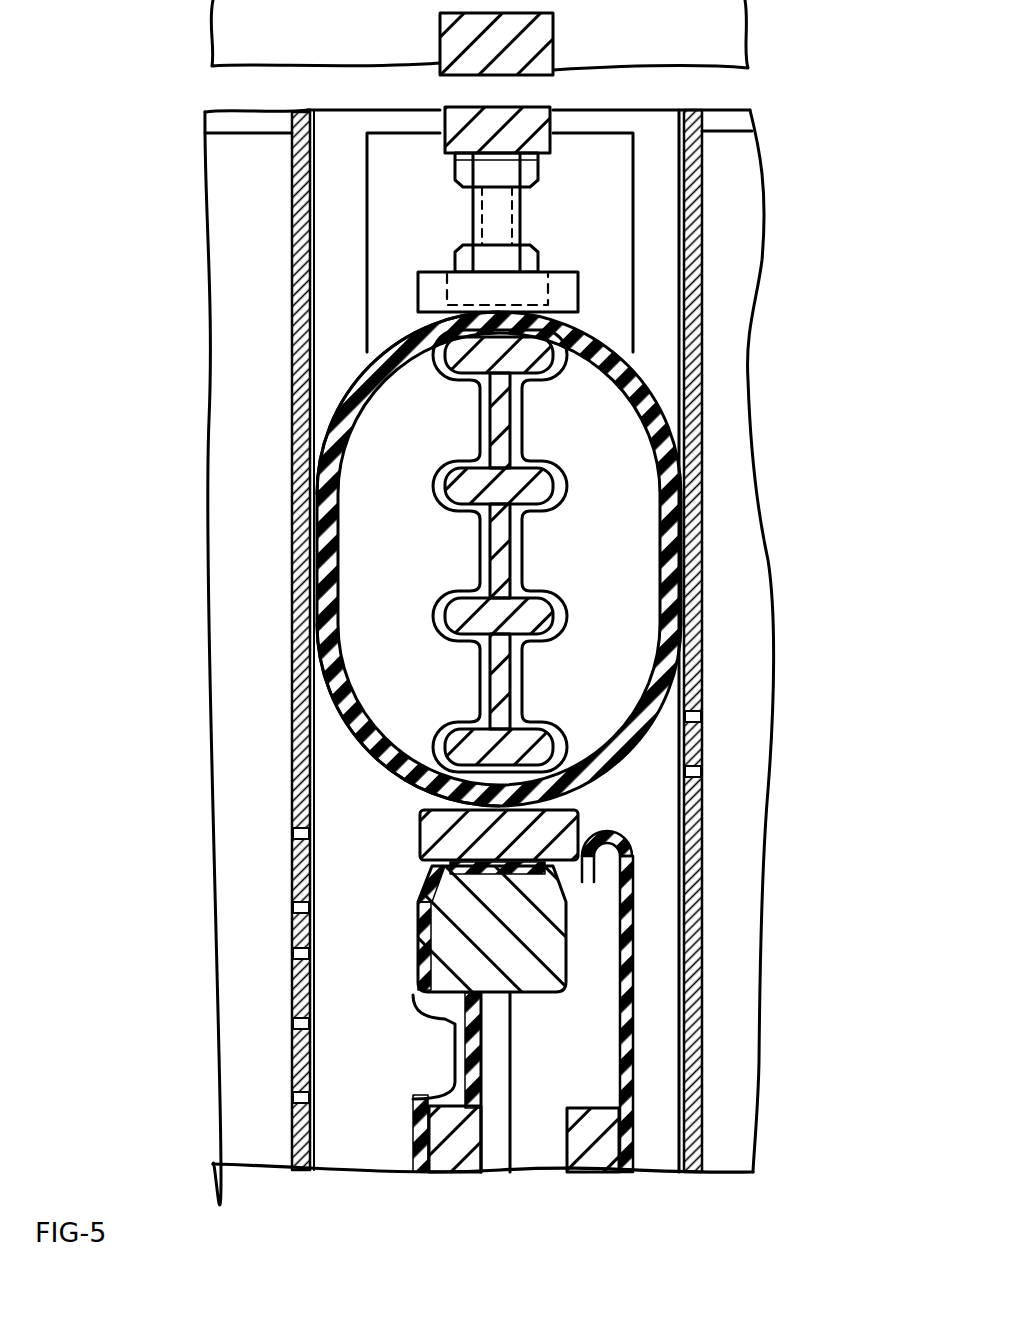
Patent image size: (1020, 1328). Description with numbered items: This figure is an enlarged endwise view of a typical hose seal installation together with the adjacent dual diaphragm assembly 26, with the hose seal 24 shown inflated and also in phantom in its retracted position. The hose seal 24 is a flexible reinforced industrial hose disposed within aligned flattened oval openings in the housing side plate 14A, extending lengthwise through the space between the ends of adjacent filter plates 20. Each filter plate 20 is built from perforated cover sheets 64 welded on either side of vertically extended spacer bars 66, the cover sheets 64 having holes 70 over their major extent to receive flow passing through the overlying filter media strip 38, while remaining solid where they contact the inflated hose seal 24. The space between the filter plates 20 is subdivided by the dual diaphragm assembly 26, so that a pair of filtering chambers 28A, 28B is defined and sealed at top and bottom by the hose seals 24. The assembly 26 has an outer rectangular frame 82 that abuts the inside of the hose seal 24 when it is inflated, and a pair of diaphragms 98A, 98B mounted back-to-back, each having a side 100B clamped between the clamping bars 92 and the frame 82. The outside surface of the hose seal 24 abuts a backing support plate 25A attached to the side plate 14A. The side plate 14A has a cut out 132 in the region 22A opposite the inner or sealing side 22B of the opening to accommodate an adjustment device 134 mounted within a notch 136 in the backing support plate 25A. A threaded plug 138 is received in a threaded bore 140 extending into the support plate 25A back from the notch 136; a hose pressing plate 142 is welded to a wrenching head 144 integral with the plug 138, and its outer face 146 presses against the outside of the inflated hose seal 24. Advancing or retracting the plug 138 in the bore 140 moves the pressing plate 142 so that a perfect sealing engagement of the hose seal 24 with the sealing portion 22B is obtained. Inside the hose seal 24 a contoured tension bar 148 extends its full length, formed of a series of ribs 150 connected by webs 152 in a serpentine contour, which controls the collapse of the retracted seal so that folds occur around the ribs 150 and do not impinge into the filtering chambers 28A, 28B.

The side plate 14A is at (660, 38).
The filter plate 20 is at (330, 1046).
The region of the opening 22A is at (323, 445).
The sealing side of the opening 22B is at (335, 732).
The hose seal 24 is at (312, 612).
The upper backing support plate 25A is at (432, 233).
The dual diaphragm assembly 26 is at (403, 1083).
The filtering chamber 28A is at (385, 1169).
The filtering chamber 28B is at (650, 1148).
The filter media strip 38 is at (672, 983).
The perforated cover sheet 64 is at (285, 890).
The spacer bar 66 is at (265, 857).
The hole 70 is at (702, 772).
The frame 82 is at (420, 830).
The clamping bar 92 is at (512, 953).
The diaphragm 98A is at (412, 998).
The diaphragm 98B is at (633, 1075).
The diaphragm side 100B is at (574, 870).
The cut out 132 is at (374, 274).
The adjustment device 134 is at (537, 232).
The notch 136 is at (541, 160).
The threaded plug 138 is at (538, 186).
The threaded bore 140 is at (482, 122).
The hose pressing plate 142 is at (418, 297).
The wrenching head 144 is at (540, 262).
The outer face 146 is at (400, 325).
The tension bar 148 is at (620, 484).
The rib 150 is at (540, 367).
The web 152 is at (487, 420).